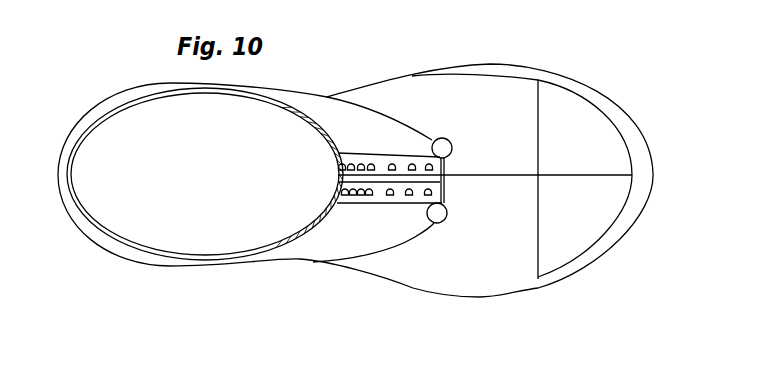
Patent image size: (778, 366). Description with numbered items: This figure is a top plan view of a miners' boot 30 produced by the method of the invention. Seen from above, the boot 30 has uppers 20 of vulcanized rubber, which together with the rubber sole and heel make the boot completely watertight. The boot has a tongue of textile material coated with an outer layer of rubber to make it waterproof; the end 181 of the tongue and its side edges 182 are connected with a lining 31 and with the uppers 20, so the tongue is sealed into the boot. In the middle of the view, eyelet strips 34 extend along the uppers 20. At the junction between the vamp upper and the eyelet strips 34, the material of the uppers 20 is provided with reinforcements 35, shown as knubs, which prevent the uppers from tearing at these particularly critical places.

The miners' boot 30 is at (591, 75).
The lining 31 is at (161, 252).
The uppers 20 is at (329, 105).
The eyelet strips 34 is at (382, 197).
The reinforcements 35 is at (444, 140).
The end of the tongue 181 is at (446, 187).
The side edges of the tongue 182 is at (375, 178).